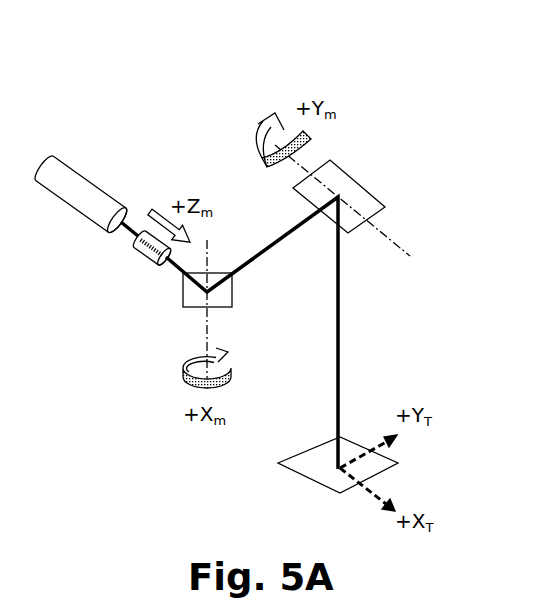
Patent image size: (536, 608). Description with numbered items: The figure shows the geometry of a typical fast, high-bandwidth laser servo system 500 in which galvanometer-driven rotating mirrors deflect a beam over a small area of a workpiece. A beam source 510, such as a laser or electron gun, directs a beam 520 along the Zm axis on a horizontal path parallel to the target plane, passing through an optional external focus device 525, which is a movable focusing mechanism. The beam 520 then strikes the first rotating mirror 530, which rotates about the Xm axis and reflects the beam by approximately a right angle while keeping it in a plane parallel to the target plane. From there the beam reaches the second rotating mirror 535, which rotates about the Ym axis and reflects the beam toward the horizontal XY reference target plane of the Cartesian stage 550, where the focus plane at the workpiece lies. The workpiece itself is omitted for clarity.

The laser mirror galvanometer system 500 is at (457, 34).
The beam source 510 is at (111, 166).
The beam 520 is at (188, 333).
The external focus device 525 is at (105, 300).
The first rotating mirror 530 is at (135, 362).
The second rotating mirror 535 is at (366, 189).
The Cartesian stage 550 is at (405, 460).